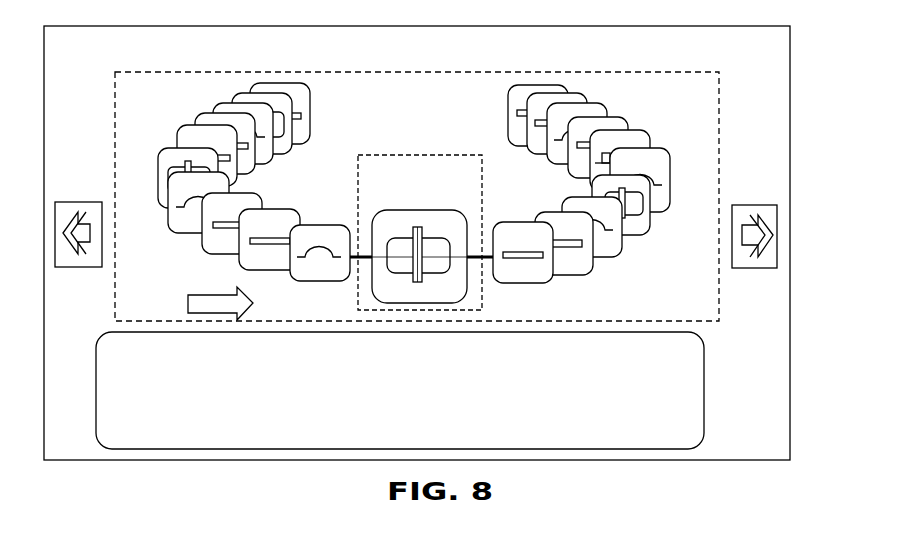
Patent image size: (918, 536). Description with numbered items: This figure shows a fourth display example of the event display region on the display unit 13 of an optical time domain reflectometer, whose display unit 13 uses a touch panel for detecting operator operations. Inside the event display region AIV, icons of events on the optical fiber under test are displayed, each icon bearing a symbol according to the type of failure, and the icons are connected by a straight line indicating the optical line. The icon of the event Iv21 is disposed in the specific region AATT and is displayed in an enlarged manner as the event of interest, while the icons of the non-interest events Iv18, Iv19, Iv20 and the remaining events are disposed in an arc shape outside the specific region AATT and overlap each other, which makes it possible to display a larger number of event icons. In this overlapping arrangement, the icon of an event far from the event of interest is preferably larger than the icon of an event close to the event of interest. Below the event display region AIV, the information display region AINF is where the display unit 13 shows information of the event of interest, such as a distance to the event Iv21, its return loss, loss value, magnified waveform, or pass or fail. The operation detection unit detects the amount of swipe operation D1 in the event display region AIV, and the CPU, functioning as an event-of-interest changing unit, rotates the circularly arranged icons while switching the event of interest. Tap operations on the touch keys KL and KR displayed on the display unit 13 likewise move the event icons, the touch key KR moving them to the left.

The display unit 13 is at (790, 105).
The event display region AIV is at (720, 106).
The specific region AATT is at (482, 208).
The information display region AINF is at (705, 368).
The event icon Iv18 is at (268, 193).
The event icon Iv19 is at (283, 217).
The event icon Iv20 is at (320, 225).
The event icon Iv21 is at (423, 210).
The touch key KL is at (75, 201).
The touch key KR is at (740, 205).
The swipe operation D1 is at (228, 296).